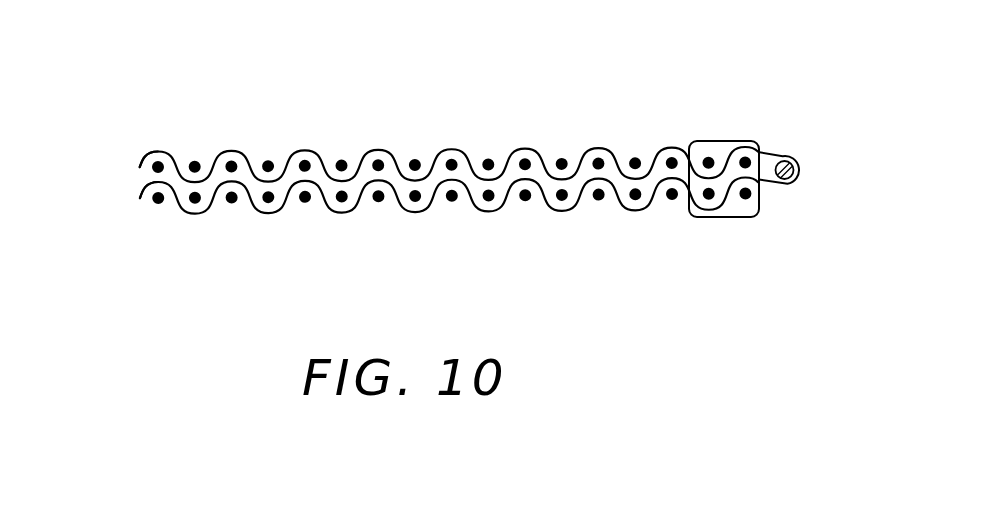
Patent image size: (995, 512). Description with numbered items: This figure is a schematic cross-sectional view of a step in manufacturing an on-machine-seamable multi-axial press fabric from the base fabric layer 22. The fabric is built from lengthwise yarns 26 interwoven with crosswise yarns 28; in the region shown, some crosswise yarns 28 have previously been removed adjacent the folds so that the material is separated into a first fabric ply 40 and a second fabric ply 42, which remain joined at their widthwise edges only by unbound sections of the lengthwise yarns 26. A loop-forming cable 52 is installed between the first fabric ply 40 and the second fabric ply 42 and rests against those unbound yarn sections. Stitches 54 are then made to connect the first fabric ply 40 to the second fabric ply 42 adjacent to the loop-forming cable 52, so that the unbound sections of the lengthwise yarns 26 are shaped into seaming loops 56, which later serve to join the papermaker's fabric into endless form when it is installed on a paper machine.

The base fabric layer 22 is at (597, 98).
The lengthwise yarns 26 is at (243, 153).
The crosswise yarns 28 is at (417, 154).
The first fabric ply 40 is at (140, 167).
The second fabric ply 42 is at (140, 198).
The loop-forming cable 52 is at (788, 186).
The stitches 54 is at (707, 141).
The seaming loops 56 is at (797, 159).